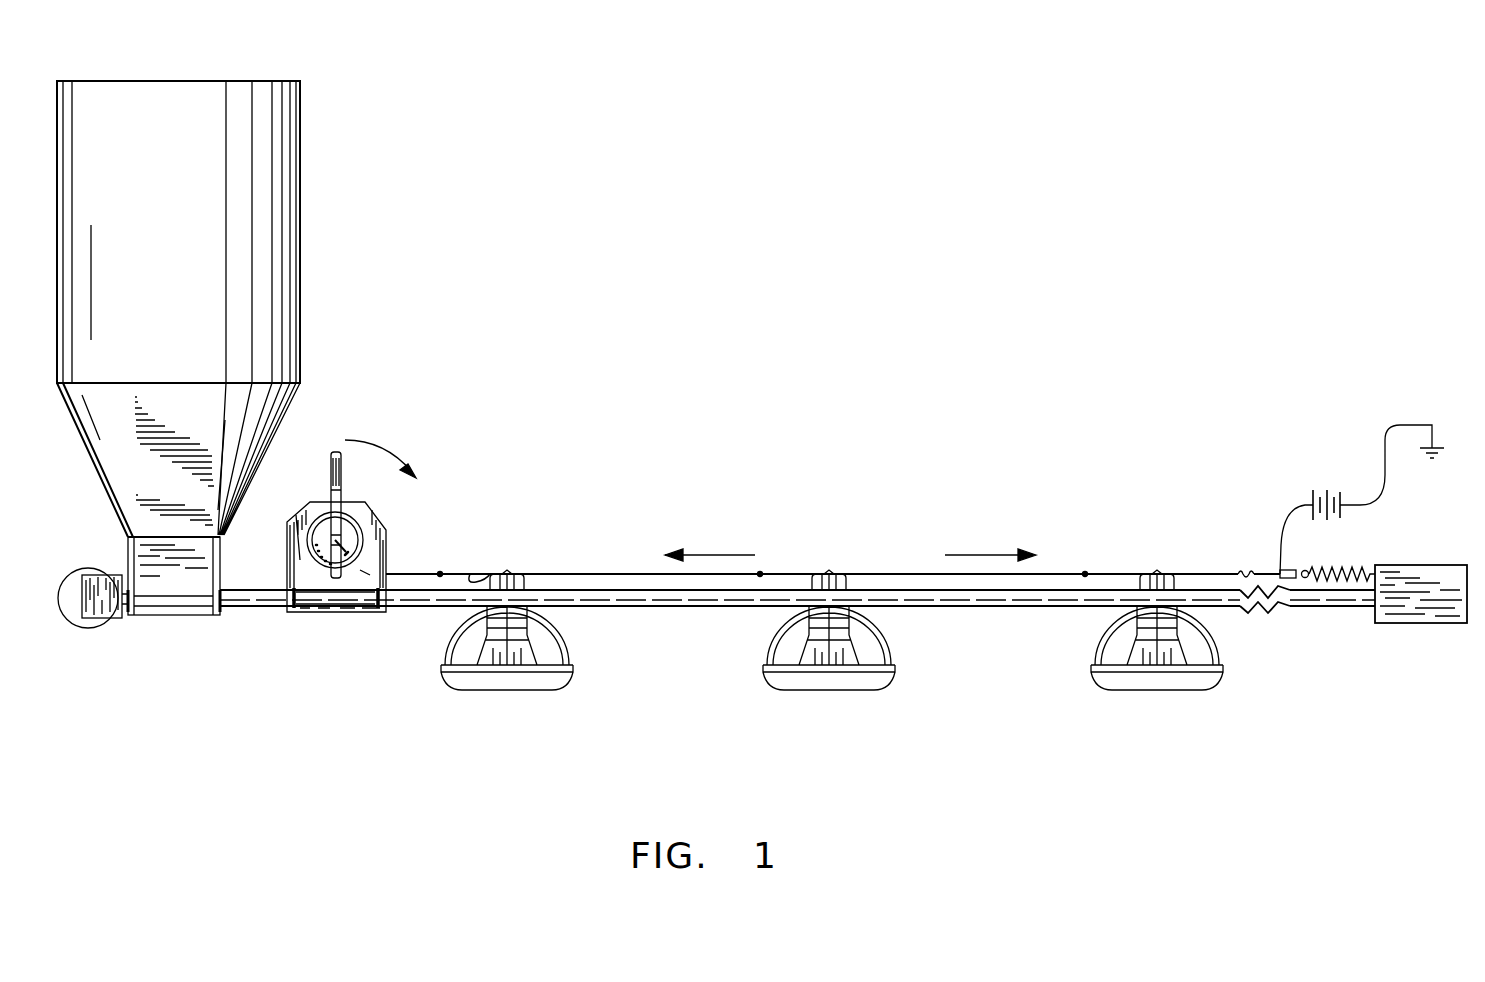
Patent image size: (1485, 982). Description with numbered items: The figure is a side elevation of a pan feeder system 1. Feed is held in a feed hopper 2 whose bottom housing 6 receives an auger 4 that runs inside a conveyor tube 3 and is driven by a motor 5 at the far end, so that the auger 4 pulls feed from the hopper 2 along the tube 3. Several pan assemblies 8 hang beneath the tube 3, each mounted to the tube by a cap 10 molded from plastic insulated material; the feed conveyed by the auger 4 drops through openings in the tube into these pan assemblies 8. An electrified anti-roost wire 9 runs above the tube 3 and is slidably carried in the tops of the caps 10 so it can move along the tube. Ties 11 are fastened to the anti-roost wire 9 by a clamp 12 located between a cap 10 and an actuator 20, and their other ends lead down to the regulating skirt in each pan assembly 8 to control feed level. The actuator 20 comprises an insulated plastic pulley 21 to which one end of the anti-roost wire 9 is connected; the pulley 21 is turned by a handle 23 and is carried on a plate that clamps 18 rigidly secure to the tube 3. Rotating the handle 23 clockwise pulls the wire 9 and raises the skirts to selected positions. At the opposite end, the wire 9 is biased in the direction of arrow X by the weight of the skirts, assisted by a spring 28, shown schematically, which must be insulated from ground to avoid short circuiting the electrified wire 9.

The pan feeder system 1 is at (848, 378).
The feed hopper 2 is at (262, 244).
The conveyor tube 3 is at (665, 608).
The auger 4 is at (1270, 612).
The motor 5 is at (1405, 608).
The bottom housing 6 is at (185, 585).
The pan assemblies 8 is at (445, 650).
The electrified anti-roost wire 9 is at (618, 572).
The cap 10 is at (516, 580).
The ties 11 is at (480, 577).
The clamp 12 is at (440, 572).
The clamps 18 is at (378, 594).
The actuator 20 is at (380, 515).
The pulley 21 is at (322, 536).
The handle 23 is at (330, 465).
The spring 28 is at (1346, 574).